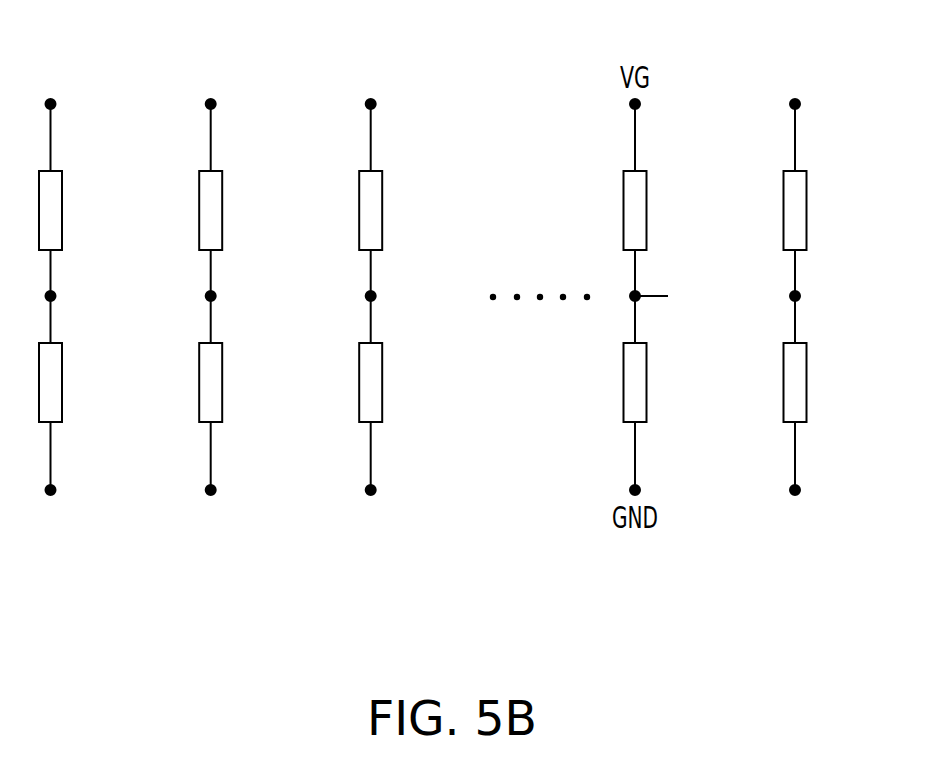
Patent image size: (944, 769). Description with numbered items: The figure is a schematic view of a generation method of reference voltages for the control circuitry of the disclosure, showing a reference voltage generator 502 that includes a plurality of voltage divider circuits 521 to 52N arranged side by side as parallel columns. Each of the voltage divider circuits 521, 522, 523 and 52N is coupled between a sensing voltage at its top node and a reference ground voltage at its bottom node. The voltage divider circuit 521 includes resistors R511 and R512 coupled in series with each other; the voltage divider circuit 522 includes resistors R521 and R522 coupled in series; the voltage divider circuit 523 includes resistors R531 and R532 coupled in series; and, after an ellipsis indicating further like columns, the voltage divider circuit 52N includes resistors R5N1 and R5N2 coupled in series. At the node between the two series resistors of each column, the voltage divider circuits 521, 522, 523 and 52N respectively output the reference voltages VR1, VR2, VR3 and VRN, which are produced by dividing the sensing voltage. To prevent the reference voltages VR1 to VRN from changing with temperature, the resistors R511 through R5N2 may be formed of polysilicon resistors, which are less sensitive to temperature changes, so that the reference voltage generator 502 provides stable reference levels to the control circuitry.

The voltage divider circuit 521 is at (89, 269).
The voltage divider circuit 522 is at (249, 269).
The voltage divider circuit 523 is at (409, 269).
The voltage divider circuit 52N is at (836, 269).
The reference voltage generator 502 is at (878, 643).
The resistor R511 is at (52, 218).
The resistor R512 is at (52, 390).
The resistor R521 is at (212, 218).
The resistor R522 is at (212, 390).
The resistor R531 is at (372, 218).
The resistor R532 is at (372, 390).
The resistor R5N1 is at (796, 218).
The resistor R5N2 is at (796, 390).
The reference voltage VR1 is at (50, 296).
The reference voltage VR2 is at (211, 296).
The reference voltage VR3 is at (371, 296).
The reference voltage VRN is at (795, 296).